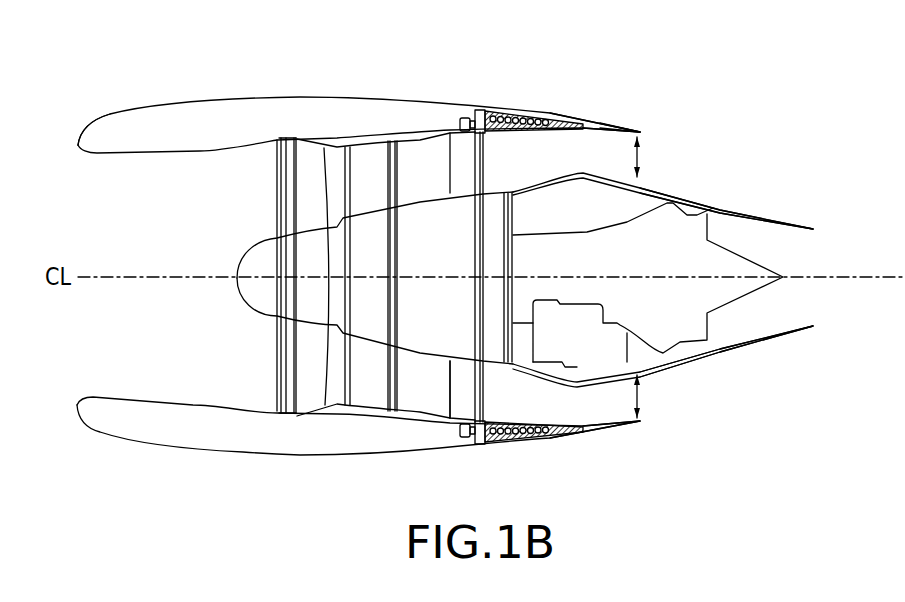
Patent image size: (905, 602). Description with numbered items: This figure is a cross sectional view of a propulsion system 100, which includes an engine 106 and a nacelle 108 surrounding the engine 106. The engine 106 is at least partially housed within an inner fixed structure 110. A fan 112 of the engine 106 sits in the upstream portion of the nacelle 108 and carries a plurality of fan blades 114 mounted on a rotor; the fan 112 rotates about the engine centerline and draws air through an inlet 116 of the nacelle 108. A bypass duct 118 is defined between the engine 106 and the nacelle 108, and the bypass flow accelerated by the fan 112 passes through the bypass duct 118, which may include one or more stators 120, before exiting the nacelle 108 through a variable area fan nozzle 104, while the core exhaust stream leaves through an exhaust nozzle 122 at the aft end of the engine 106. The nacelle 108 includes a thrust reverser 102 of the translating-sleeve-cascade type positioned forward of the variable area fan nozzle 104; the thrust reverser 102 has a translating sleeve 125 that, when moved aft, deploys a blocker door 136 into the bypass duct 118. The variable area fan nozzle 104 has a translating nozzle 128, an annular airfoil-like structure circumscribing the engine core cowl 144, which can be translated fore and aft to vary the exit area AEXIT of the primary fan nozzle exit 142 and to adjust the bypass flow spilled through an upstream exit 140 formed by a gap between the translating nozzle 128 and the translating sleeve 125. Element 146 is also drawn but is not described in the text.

The propulsion system 100 is at (100, 78).
The thrust reverser 102 is at (505, 88).
The variable area fan nozzle 104 is at (642, 118).
The engine 106 is at (225, 305).
The nacelle 108 is at (207, 100).
The inner fixed structure 110 is at (543, 181).
The fan 112 is at (303, 200).
The fan blades 114 is at (303, 353).
The inlet 116 is at (97, 153).
The bypass duct 118 is at (422, 157).
The stators 120 is at (468, 402).
The exhaust nozzle 122 is at (790, 332).
The translating sleeve 125 is at (523, 105).
The translating nozzle 128 is at (610, 123).
The blocker door 136 is at (497, 137).
The upstream exit 140 is at (582, 437).
The primary fan nozzle exit 142 is at (642, 397).
The engine core cowl 144 is at (697, 197).
The actuator rod 146 is at (555, 118).
The exit area AEXIT is at (643, 157).